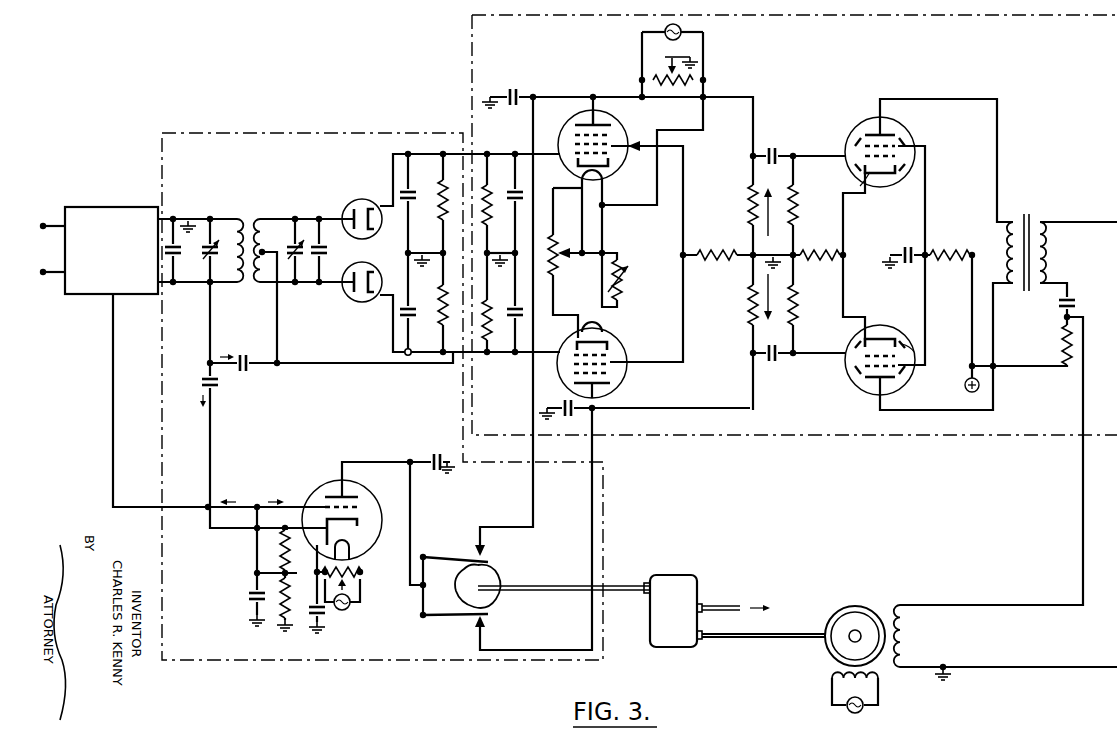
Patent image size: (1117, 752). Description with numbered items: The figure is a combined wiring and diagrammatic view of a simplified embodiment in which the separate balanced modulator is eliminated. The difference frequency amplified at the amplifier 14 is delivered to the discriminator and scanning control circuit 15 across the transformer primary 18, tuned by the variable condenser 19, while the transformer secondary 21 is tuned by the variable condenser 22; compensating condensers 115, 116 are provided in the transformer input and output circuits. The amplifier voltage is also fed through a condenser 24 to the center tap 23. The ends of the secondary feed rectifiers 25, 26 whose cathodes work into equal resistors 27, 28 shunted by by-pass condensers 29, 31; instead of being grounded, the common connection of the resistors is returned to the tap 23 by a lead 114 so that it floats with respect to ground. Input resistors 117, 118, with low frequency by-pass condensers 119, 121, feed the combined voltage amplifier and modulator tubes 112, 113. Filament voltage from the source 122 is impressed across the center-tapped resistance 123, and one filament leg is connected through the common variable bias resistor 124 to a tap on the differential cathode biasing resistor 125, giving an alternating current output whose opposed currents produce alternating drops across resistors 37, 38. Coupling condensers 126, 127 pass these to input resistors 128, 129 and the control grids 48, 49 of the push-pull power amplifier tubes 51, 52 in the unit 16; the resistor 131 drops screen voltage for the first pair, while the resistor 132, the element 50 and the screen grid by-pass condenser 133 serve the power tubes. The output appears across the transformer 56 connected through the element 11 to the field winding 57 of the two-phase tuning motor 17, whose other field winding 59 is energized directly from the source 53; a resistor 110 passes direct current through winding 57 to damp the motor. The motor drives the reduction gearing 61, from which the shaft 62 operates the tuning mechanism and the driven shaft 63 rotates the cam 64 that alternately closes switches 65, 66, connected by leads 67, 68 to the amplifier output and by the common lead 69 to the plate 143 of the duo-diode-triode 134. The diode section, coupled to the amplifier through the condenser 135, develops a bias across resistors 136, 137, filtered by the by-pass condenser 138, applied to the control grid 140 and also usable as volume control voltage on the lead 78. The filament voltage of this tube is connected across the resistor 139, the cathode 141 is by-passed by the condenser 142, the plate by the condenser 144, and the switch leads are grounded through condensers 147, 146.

The amplifier 14 is at (114, 207).
The compensating condenser 115 is at (176, 250).
The variable condenser 19 is at (205, 240).
The transformer primary 18 is at (238, 220).
The transformer secondary 21 is at (262, 218).
The center tap 23 is at (264, 248).
The variable condenser 22 is at (292, 238).
The compensating condenser 116 is at (324, 251).
The rectifier 25 is at (369, 198).
The rectifier 26 is at (360, 304).
The by-pass condenser 29 is at (410, 194).
The resistor 27 is at (440, 214).
The resistor 28 is at (439, 311).
The by-pass condenser 31 is at (412, 317).
The input resistor 117 is at (490, 211).
The by-pass condenser 119 is at (513, 189).
The input resistor 118 is at (488, 343).
The by-pass condenser 121 is at (526, 315).
The radio frequency blocking and by-pass condenser 146 is at (513, 92).
The tube 112 is at (570, 126).
The differential cathode biasing resistor 125 is at (555, 241).
The common variable bias resistor 124 is at (624, 284).
The source 122 is at (682, 34).
The resistance 123 is at (700, 71).
The tube 113 is at (621, 376).
The radio frequency blocking and by-pass condenser 147 is at (558, 406).
The screen voltage dropping resistor 131 is at (714, 260).
The resistor 37 is at (748, 200).
The resistor 38 is at (748, 308).
The coupling condenser 126 is at (773, 150).
The coupling condenser 127 is at (773, 363).
The input resistor 128 is at (796, 197).
The input resistor 129 is at (796, 299).
The resistor 50 is at (816, 253).
The tube 51 is at (861, 122).
The control grid 48 is at (912, 171).
The tube 52 is at (872, 333).
The control grid 49 is at (912, 344).
The screen grid by-pass condenser 133 is at (906, 252).
The resistor 132 is at (950, 252).
The transformer 56 is at (1025, 221).
The capacitor 11 is at (1075, 300).
The resistor 110 is at (1062, 339).
The amplifier unit 16 is at (1006, 436).
The discriminator and scanning control circuit 15 is at (603, 526).
The lead 114 is at (426, 364).
The condenser 24 is at (244, 371).
The blocking or coupling condenser 135 is at (211, 386).
The lead 78 is at (113, 407).
The duo-diode-triode 134 is at (322, 482).
The plate 143 is at (344, 496).
The control grid 140 is at (359, 506).
The cathode 141 is at (359, 522).
The resistor 139 is at (359, 566).
The radio frequency by-pass condenser 142 is at (321, 623).
The radio frequency by-pass condenser 144 is at (434, 460).
The common lead 69 is at (411, 525).
The resistor 136 is at (278, 551).
The by-pass condenser 138 is at (256, 573).
The resistor 137 is at (255, 599).
The switch 65 is at (426, 556).
The switch 66 is at (425, 618).
The cam 64 is at (496, 573).
The driven shaft 63 is at (531, 586).
The lead 67 is at (484, 546).
The lead 68 is at (483, 642).
The reduction gearing 61 is at (694, 582).
The shaft 62 is at (728, 608).
The two-phase tuning motor 17 is at (830, 643).
The field winding 57 is at (906, 642).
The field winding 59 is at (876, 682).
The source 53 is at (846, 710).